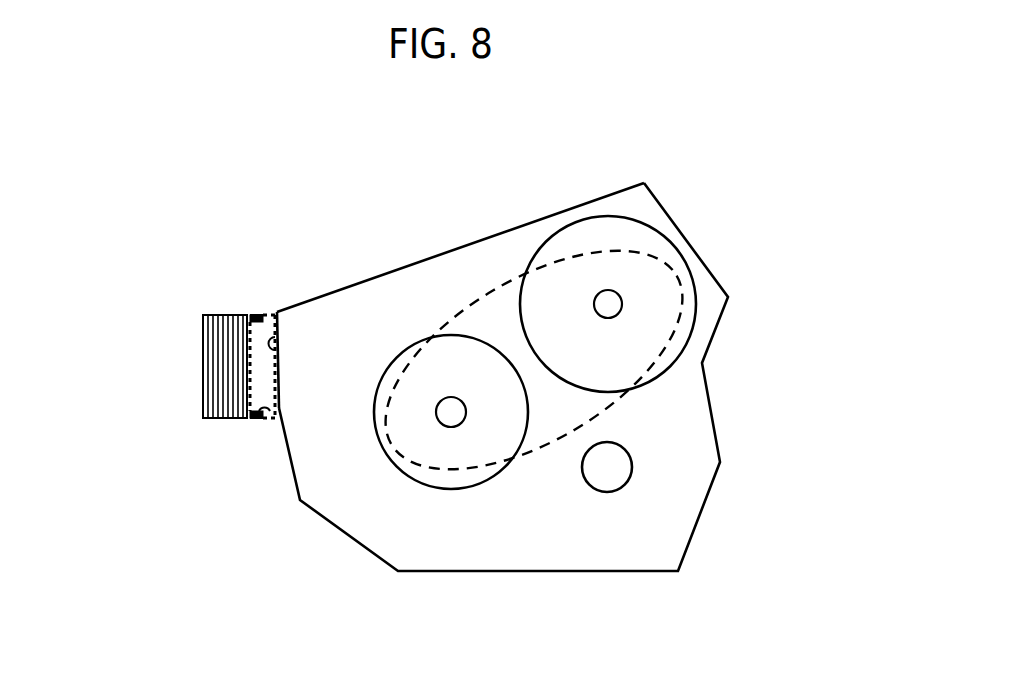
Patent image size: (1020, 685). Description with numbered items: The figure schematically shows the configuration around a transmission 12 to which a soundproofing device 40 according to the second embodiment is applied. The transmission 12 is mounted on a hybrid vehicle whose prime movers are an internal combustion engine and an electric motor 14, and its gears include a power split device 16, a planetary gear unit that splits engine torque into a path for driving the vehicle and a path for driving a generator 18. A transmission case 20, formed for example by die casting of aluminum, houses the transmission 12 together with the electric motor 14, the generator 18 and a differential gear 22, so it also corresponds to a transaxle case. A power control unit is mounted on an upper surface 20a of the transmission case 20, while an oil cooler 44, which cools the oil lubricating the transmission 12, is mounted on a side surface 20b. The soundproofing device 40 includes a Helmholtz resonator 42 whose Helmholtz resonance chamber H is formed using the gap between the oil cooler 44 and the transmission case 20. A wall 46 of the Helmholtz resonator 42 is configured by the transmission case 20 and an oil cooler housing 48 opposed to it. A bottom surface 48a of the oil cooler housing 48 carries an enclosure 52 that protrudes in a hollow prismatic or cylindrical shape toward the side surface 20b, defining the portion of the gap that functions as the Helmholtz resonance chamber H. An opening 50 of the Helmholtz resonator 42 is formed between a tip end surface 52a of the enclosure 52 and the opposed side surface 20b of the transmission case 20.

The transmission 12 is at (703, 247).
The electric motor 14 is at (690, 338).
The power split device 16 is at (550, 444).
The generator 18 is at (453, 490).
The transmission case 20 is at (327, 524).
The upper surface 20a is at (525, 226).
The side surface 20b is at (277, 350).
The differential gear 22 is at (607, 493).
The soundproofing device 40 is at (268, 236).
The Helmholtz resonator 42 is at (257, 287).
The oil cooler 44 is at (178, 331).
The wall 46 is at (101, 398).
The oil cooler housing 48 is at (198, 402).
The bottom surface 48a is at (277, 380).
The opening 50 is at (273, 313).
The enclosure 52 is at (250, 312).
The tip end surface 52a is at (268, 308).
The Helmholtz resonance chamber H is at (270, 423).